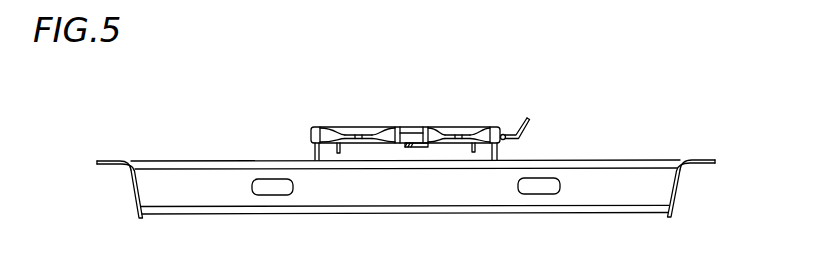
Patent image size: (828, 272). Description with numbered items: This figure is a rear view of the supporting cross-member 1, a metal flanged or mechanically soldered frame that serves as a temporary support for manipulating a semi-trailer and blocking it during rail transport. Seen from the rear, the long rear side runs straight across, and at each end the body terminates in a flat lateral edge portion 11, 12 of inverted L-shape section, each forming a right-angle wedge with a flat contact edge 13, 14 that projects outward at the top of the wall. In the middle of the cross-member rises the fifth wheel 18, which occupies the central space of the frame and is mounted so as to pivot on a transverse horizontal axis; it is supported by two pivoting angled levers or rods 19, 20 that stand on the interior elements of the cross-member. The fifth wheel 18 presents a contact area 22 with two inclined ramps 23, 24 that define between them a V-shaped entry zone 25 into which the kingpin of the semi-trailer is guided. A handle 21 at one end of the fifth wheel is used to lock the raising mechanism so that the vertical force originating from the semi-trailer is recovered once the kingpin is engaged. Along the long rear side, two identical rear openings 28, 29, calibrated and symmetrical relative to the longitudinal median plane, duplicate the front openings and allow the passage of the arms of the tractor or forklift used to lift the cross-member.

The supporting cross-member 1 is at (647, 116).
The flat lateral edge portion 11 is at (116, 187).
The flat lateral edge portion 12 is at (692, 189).
The flat contact edge 13 is at (105, 161).
The flat contact edge 14 is at (702, 160).
The fifth wheel 18 is at (452, 108).
The angled lever 19 is at (310, 155).
The angled lever 20 is at (497, 153).
The handle 21 is at (537, 120).
The contact area 22 is at (408, 124).
The inclined ramp 23 is at (350, 128).
The inclined ramp 24 is at (458, 137).
The V-shaped entry zone 25 is at (420, 138).
The rear opening 28 is at (272, 185).
The rear opening 29 is at (536, 187).